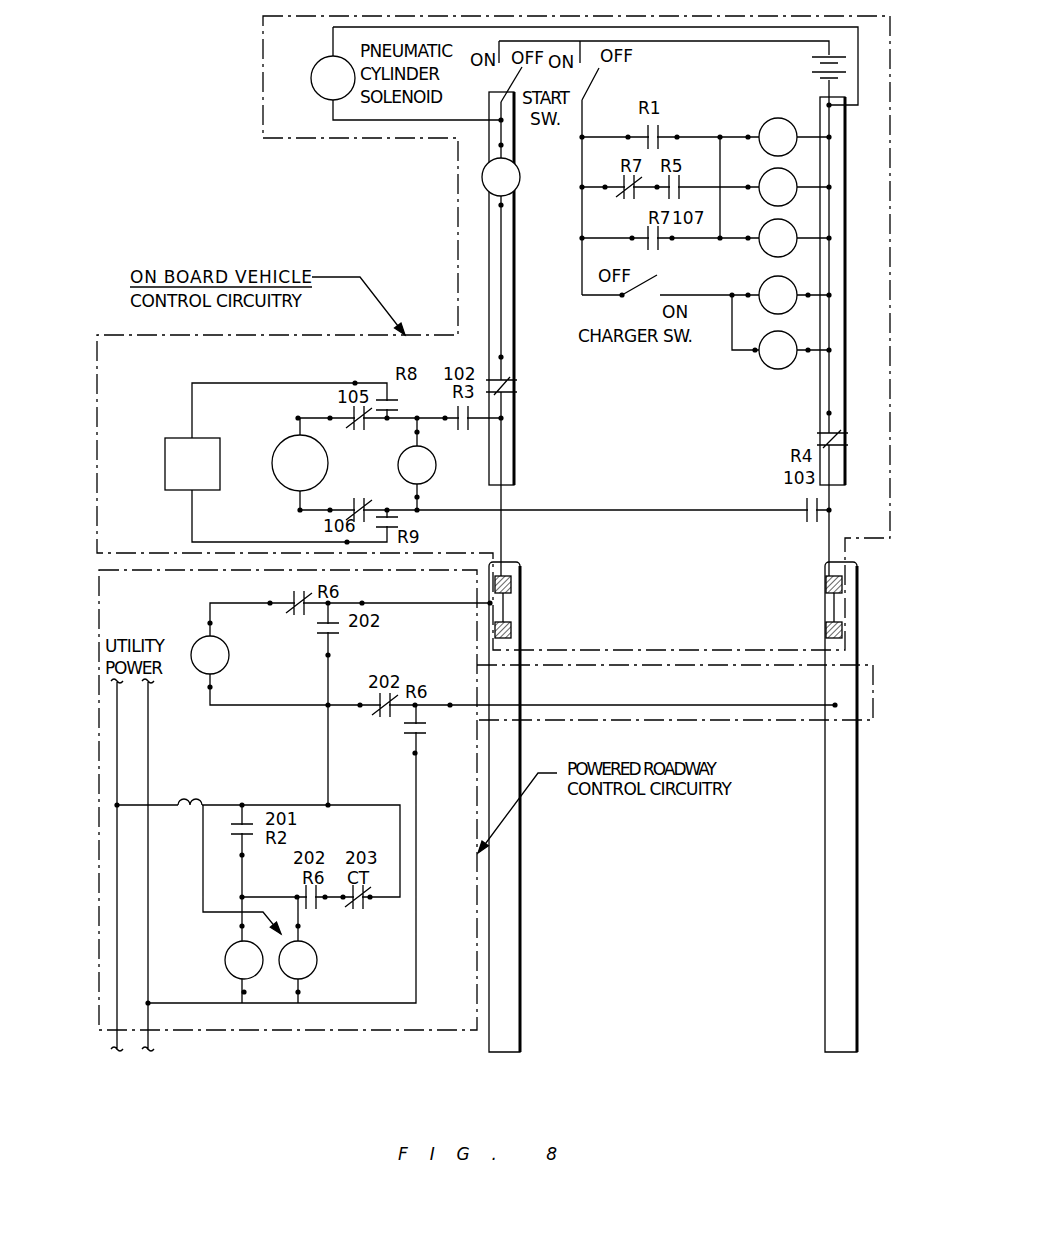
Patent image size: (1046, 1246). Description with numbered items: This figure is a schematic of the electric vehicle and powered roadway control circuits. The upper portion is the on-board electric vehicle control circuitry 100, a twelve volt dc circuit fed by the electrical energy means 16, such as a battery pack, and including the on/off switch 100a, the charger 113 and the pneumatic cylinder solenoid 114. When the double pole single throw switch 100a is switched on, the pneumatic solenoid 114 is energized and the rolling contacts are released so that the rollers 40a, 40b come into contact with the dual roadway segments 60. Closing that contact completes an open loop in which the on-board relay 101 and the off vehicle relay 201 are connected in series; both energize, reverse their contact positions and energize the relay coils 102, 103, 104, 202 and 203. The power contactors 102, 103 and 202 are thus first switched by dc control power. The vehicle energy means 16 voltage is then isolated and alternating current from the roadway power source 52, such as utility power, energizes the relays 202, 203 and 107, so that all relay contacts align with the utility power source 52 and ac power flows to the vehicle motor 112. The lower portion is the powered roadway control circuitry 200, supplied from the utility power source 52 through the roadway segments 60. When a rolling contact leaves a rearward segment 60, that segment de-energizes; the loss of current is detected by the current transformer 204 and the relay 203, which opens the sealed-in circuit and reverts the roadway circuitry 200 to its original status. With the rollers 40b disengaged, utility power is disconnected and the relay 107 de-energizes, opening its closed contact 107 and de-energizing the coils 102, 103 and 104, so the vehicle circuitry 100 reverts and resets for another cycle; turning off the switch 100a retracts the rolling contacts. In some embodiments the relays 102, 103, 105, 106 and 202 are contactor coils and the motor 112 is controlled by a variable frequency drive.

The pneumatic cylinder solenoid 114 is at (311, 78).
The electric vehicle control circuitry 100 is at (457, 248).
The on/off switch 100a is at (538, 84).
The on-board relay 101 is at (517, 168).
The power contactor 102 is at (767, 122).
The power contactor 103 is at (766, 174).
The relay coil 104 is at (766, 226).
The contactor coil 105 is at (766, 282).
The contactor coil 106 is at (780, 368).
The relay 107 is at (618, 180).
The electrical energy means 16 is at (851, 72).
The roadway segments 60 is at (516, 325).
The charger 113 is at (200, 455).
The vehicle motor 112 is at (297, 487).
The roller 40a is at (514, 584).
The roller 40b is at (514, 630).
The off vehicle relay 201 is at (230, 651).
The power contactor 202 is at (226, 958).
The relay 203 is at (317, 958).
The current transformer 204 is at (188, 790).
The power source 52 is at (150, 921).
The powered roadway control circuitry 200 is at (307, 1034).